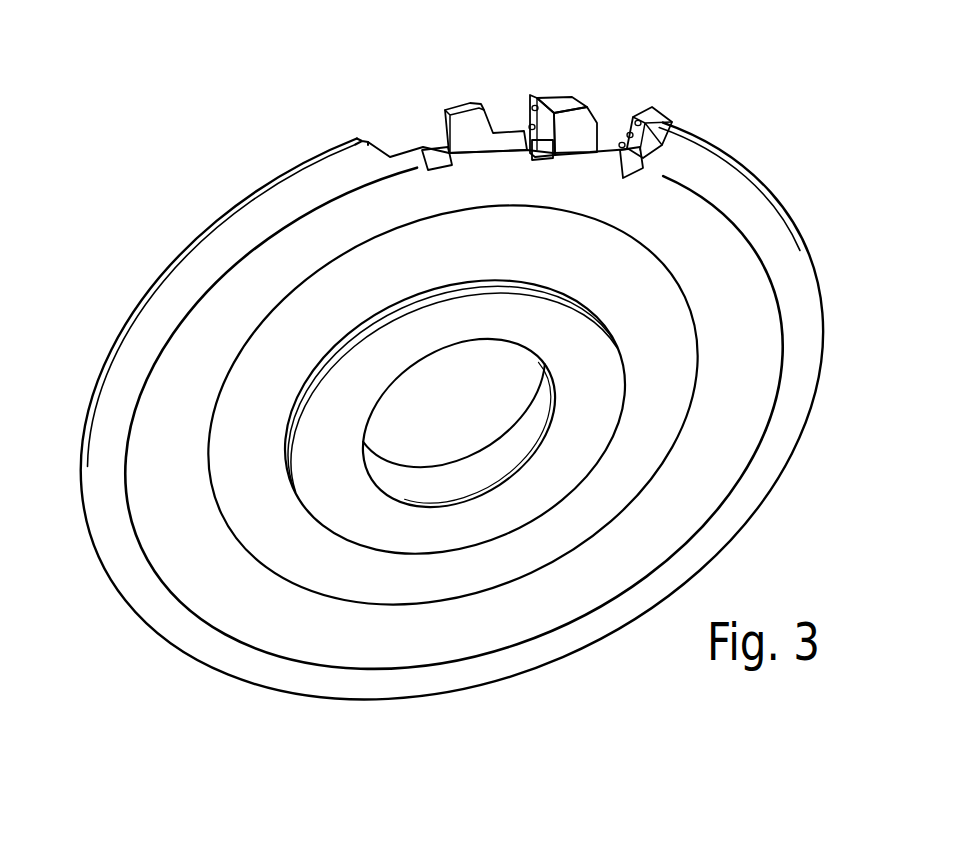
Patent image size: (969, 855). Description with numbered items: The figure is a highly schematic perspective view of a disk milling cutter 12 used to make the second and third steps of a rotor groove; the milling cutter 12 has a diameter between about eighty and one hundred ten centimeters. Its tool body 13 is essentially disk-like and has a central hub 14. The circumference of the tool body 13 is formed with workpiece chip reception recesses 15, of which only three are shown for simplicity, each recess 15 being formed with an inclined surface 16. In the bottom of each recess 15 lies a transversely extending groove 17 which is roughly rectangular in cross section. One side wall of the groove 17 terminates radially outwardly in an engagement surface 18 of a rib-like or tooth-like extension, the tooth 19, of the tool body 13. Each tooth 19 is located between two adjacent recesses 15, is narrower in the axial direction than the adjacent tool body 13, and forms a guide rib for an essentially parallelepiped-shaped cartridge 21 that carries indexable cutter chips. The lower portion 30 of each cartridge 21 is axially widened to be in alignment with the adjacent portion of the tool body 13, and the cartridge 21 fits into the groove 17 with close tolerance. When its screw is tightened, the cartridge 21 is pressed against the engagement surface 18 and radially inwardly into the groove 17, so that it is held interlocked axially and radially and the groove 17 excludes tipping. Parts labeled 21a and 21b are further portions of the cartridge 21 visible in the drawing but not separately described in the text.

The milling cutter 12 is at (766, 168).
The tool body 13 is at (768, 260).
The hub 14 is at (600, 364).
The workpiece chip reception recesses 15 is at (395, 138).
The inclined surface 16 is at (380, 130).
The groove 17 is at (443, 171).
The engagement surface 18 is at (445, 110).
The tooth 19 is at (472, 131).
The cartridge 21 is at (559, 93).
The holder lower part 21a is at (656, 150).
The holder side face 21b is at (551, 117).
The lower portion 30 is at (548, 158).